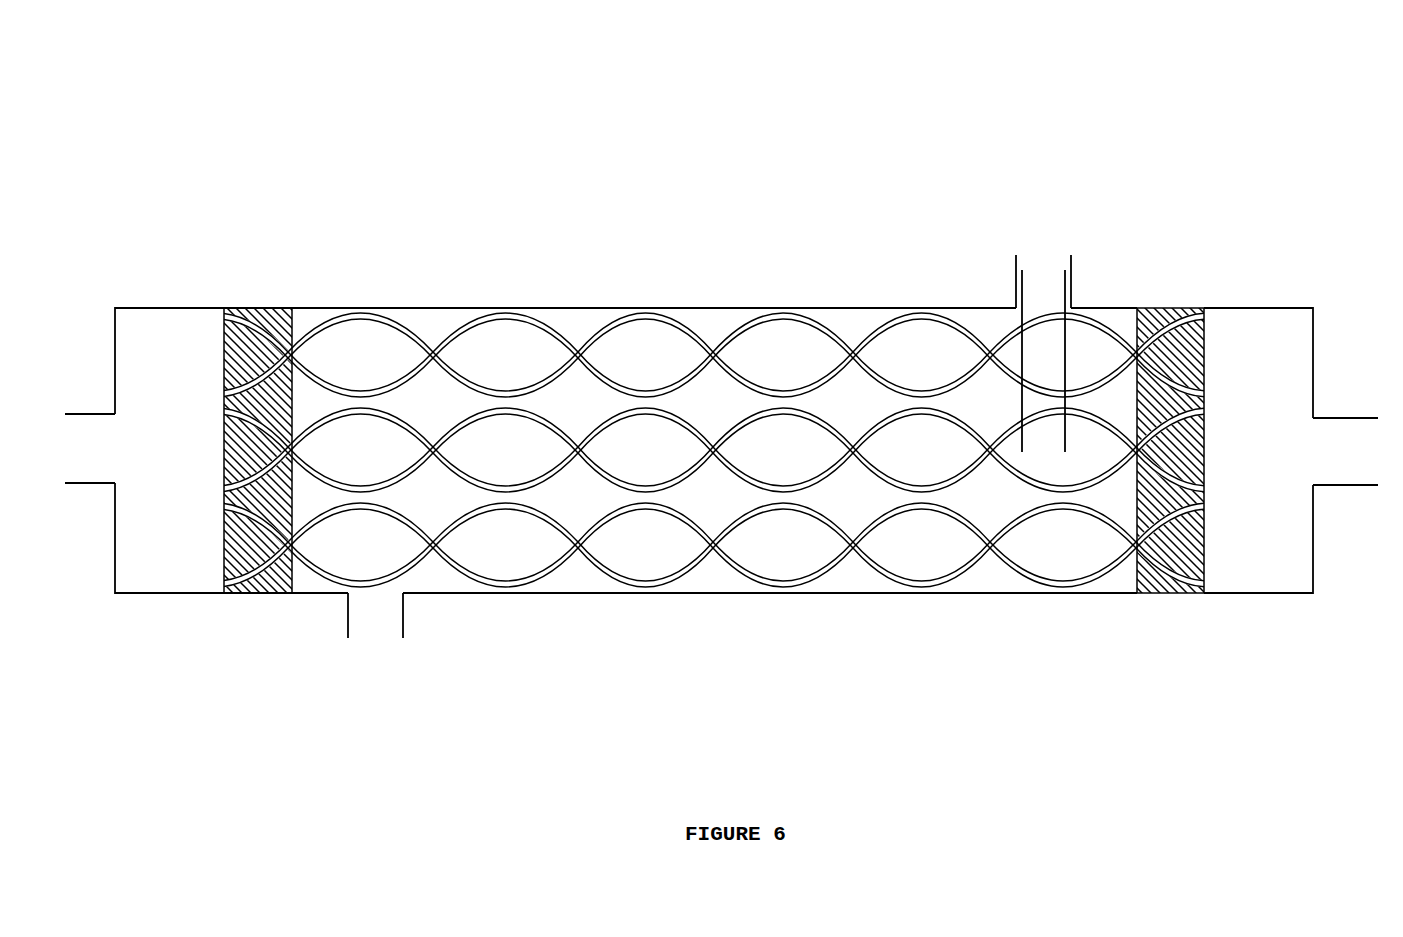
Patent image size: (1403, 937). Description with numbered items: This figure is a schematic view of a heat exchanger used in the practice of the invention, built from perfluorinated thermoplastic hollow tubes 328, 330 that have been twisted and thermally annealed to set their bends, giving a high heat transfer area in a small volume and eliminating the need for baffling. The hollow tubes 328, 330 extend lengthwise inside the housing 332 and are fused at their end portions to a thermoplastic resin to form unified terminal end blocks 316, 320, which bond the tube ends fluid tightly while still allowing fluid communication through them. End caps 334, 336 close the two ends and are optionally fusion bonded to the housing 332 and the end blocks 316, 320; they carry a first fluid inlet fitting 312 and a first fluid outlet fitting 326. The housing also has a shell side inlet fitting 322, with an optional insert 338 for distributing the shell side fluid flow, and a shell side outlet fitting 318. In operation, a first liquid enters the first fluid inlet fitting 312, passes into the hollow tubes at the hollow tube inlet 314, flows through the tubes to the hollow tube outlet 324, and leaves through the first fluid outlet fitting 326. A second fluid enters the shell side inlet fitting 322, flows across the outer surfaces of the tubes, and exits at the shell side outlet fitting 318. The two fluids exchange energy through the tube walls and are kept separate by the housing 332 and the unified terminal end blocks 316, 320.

The first fluid inlet fitting 312 is at (85, 487).
The hollow tube inlet 314 is at (223, 390).
The unified terminal end block 316 is at (283, 307).
The shell side outlet fitting 318 is at (370, 635).
The unified terminal end block 320 is at (1152, 307).
The shell side inlet fitting 322 is at (1043, 253).
The hollow tube outlet 324 is at (1204, 392).
The first fluid outlet fitting 326 is at (1343, 486).
The hollow tube 328 is at (600, 572).
The hollow tube 330 is at (812, 573).
The housing 332 is at (987, 593).
The end cap 334 is at (188, 307).
The end cap 336 is at (1257, 593).
The insert 338 is at (1013, 318).